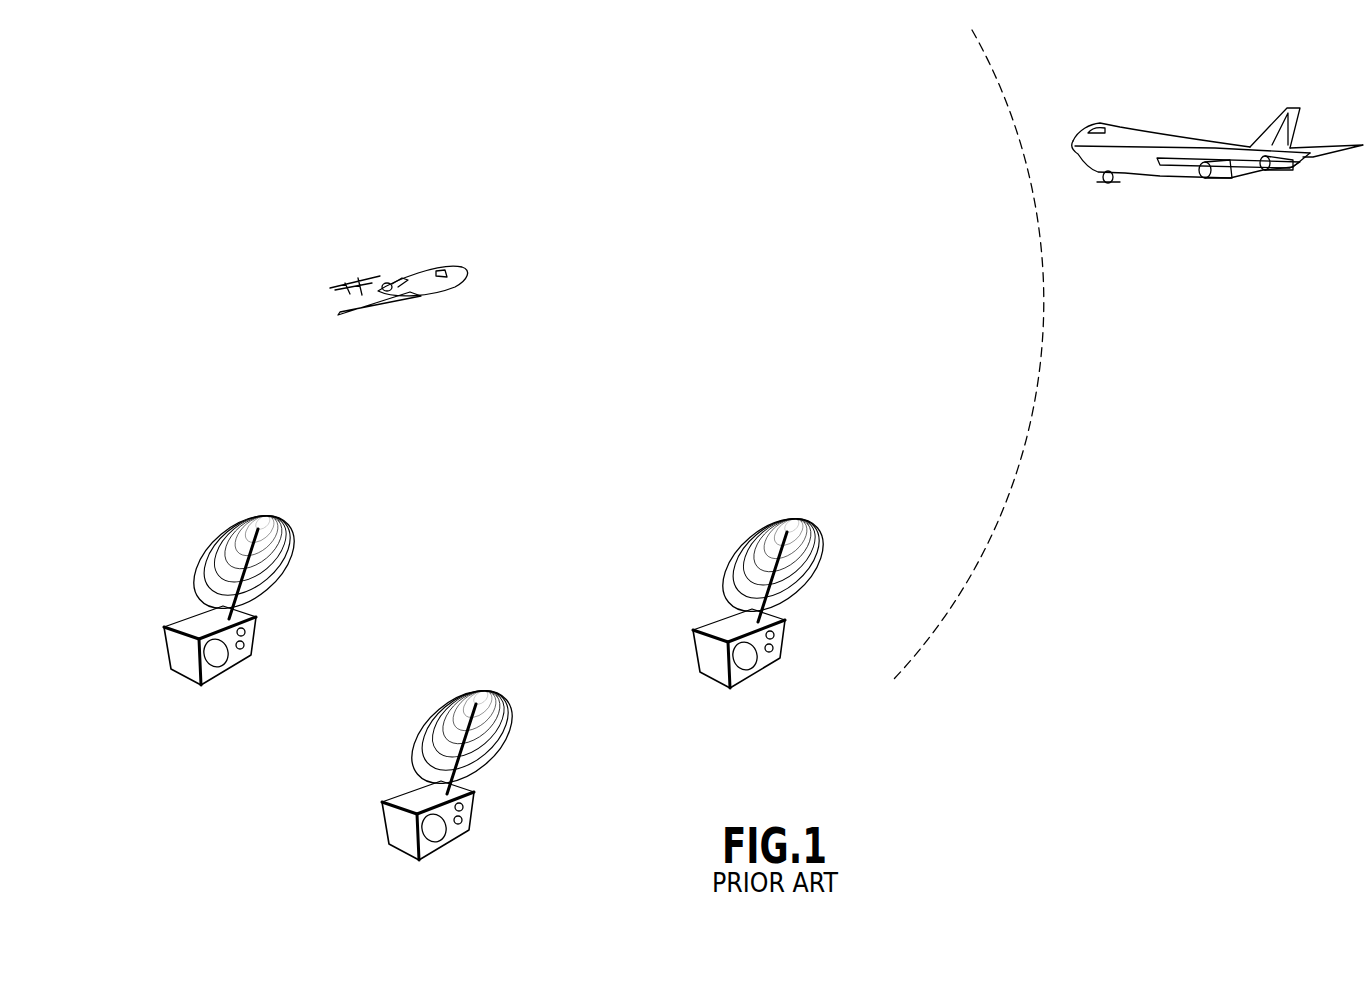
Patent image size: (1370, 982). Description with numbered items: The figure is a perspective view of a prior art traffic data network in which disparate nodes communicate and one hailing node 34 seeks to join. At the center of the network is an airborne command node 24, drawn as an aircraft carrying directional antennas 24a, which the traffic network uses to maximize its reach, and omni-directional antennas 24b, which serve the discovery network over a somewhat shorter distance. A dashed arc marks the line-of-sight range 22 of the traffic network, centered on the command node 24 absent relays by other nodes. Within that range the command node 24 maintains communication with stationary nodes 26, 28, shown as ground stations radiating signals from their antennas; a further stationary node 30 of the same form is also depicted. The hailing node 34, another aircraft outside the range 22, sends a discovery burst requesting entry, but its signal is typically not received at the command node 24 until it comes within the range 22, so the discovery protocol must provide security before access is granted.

The range 22 is at (1041, 330).
The command node 24 is at (441, 300).
The directional antennas 24a is at (467, 280).
The omni-directional antennas 24b is at (422, 311).
The stationary node 26 is at (192, 622).
The stationary node 28 is at (717, 623).
The ground station transmitter 30 is at (403, 797).
The hailing node 34 is at (1203, 195).